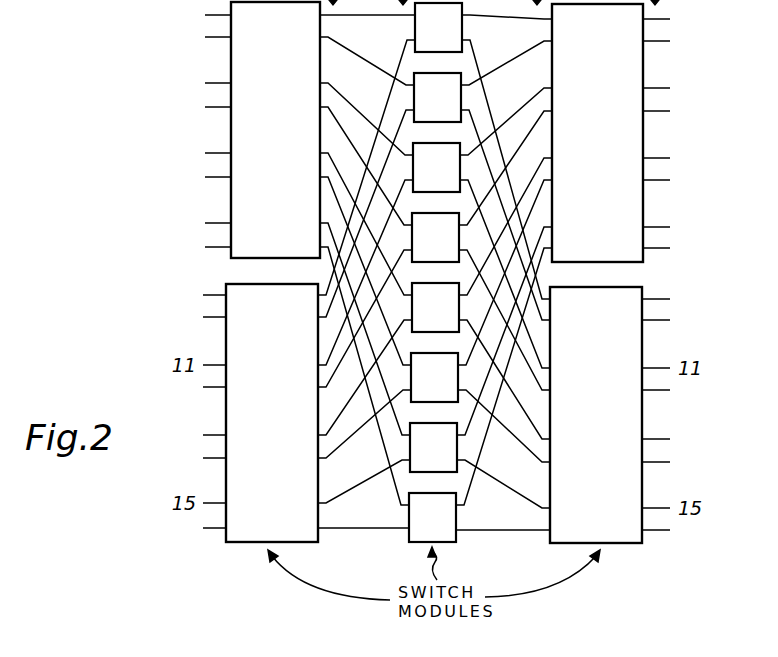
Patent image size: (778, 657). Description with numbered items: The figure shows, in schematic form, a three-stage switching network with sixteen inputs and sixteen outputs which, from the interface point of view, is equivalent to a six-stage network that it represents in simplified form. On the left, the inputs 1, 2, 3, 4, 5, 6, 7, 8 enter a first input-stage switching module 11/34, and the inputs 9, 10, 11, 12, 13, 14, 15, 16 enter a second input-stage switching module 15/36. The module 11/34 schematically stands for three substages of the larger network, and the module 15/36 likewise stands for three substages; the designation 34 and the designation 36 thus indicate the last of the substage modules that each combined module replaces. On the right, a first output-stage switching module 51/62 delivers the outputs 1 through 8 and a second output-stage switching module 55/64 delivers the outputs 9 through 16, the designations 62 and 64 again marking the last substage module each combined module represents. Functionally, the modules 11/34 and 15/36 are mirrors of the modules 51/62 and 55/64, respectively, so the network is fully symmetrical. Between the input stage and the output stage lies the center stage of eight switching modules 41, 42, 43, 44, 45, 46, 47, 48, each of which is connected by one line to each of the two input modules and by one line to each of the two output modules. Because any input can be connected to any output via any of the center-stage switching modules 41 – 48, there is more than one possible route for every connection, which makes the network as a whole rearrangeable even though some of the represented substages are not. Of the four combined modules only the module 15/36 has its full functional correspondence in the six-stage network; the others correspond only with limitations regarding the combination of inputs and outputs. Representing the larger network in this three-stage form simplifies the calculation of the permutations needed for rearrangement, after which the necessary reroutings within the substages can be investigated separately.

The input/output 1 is at (437, 17).
The input/output 2 is at (437, 39).
The input/output 3 is at (437, 85).
The input/output 4 is at (437, 109).
The input/output 5 is at (437, 155).
The input/output 6 is at (437, 178).
The input/output 7 is at (437, 225).
The input/output 8 is at (437, 247).
The input/output 9 is at (437, 297).
The input/output 10 is at (437, 318).
The switching module 11/34 (first input stage) 11 is at (275, 130).
The input/output 12 is at (437, 388).
The input/output 13 is at (437, 437).
The input/output 14 is at (437, 460).
The switching module 15/36 (second input stage) 15 is at (272, 413).
The input/output 16 is at (437, 529).
The switching module 11/34 (first input stage) 34 is at (275, 130).
The switching module 15/36 (second input stage) 36 is at (272, 413).
The switching module 41 is at (438, 27).
The switching module 42 is at (437, 97).
The switching module 43 is at (436, 167).
The switching module 44 is at (435, 237).
The switching module 45 is at (435, 307).
The switching module 46 is at (434, 377).
The switching module 47 is at (433, 447).
The switching module 48 is at (432, 517).
The switching module 51/62 (first output stage) 51 is at (597, 133).
The switching module 51/62 (first output stage) 62 is at (597, 133).
The switching module 55/64 (second output stage) 55 is at (596, 415).
The switching module 55/64 (second output stage) 64 is at (596, 415).